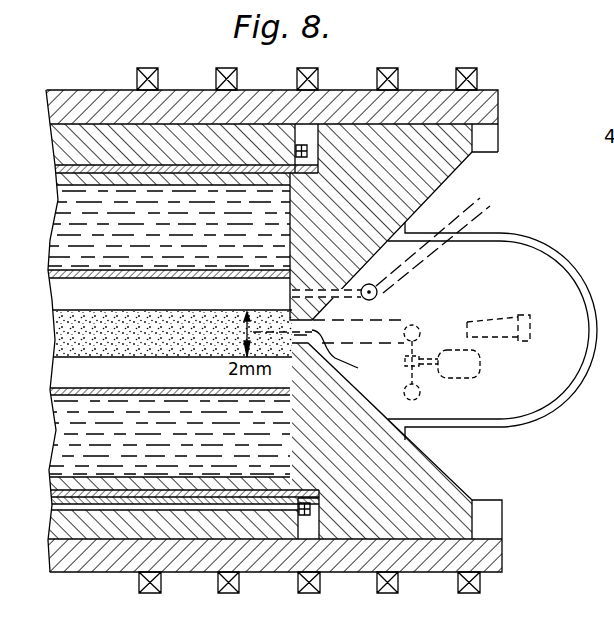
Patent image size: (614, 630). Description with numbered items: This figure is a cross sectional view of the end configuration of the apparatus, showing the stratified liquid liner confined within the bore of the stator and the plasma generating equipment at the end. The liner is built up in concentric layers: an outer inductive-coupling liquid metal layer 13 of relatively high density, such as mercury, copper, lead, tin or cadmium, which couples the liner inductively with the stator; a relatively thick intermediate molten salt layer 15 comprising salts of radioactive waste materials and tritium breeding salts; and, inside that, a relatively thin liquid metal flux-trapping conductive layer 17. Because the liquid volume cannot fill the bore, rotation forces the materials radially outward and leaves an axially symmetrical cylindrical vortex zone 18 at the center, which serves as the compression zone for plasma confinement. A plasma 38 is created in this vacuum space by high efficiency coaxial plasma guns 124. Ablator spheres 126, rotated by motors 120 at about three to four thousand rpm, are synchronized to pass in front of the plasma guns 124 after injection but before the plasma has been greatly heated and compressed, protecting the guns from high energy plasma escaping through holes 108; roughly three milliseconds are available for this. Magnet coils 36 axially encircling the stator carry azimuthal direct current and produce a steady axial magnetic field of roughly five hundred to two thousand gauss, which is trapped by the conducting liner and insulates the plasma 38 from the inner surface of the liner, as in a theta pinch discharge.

The outer inductive-coupling liquid metal layer 13 is at (103, 185).
The magnet coil 36 is at (146, 68).
The intermediate molten salt layer 15 is at (213, 257).
The liquid metal flux-trapping conductive layer 17 is at (281, 276).
The cylindrical vortex zone 18 is at (99, 306).
The plasma 38 is at (126, 347).
The holes 108 is at (345, 365).
The ablator spheres 126 is at (419, 322).
The coaxial plasma guns 124 is at (510, 325).
The motors 120 is at (478, 368).